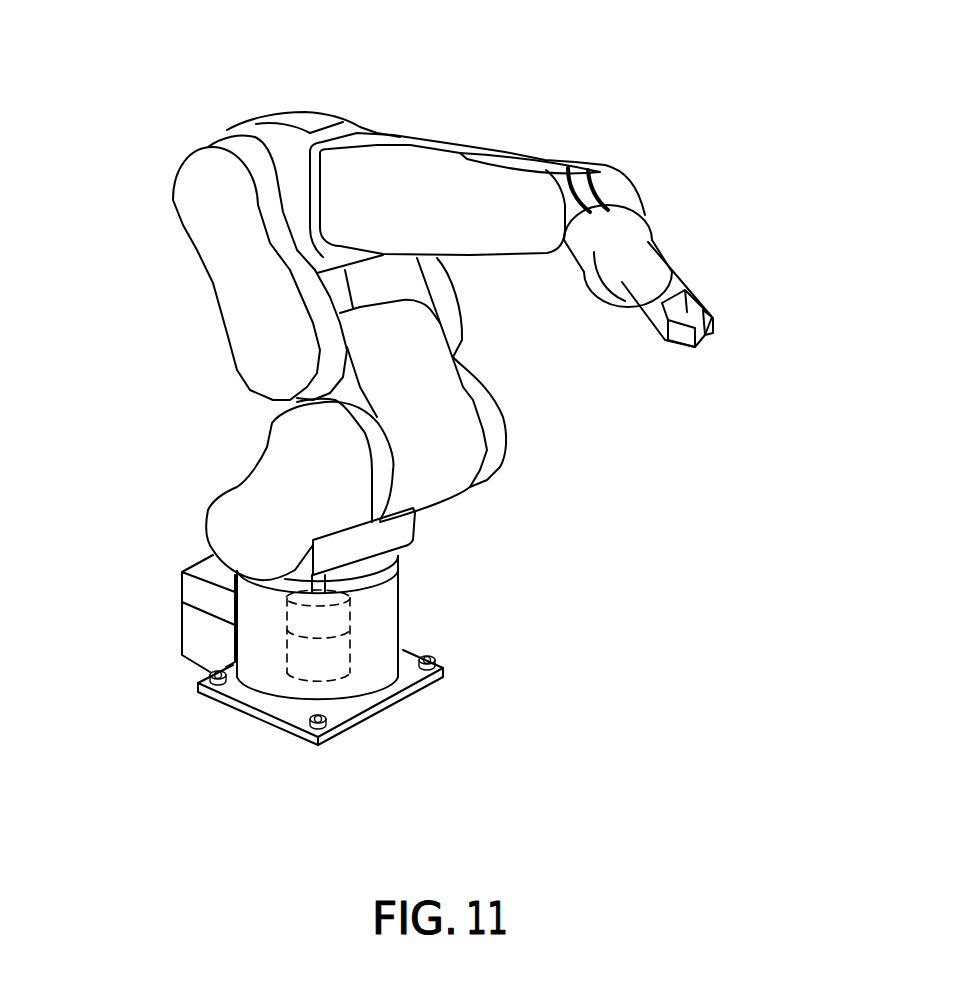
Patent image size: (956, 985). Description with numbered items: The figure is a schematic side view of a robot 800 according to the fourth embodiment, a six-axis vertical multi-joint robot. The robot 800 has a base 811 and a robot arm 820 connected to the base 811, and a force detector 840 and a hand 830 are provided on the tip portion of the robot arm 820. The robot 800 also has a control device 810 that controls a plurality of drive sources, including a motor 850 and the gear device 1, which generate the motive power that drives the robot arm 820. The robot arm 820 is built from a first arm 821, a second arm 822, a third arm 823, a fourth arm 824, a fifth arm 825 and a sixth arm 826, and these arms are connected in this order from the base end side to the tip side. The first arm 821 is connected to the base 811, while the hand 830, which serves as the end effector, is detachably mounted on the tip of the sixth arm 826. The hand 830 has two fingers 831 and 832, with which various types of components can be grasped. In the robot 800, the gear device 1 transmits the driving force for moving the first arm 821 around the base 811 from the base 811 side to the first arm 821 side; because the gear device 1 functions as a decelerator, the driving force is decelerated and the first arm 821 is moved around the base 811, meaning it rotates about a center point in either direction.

The gear device 1 is at (345, 468).
The robot 800 is at (522, 108).
The control device 810 is at (193, 628).
The base 811 is at (344, 694).
The robot arm 820 is at (428, 128).
The first arm 821 is at (237, 522).
The second arm 822 is at (237, 287).
The third arm 823 is at (270, 137).
The fourth arm 824 is at (343, 188).
The fifth arm 825 is at (600, 170).
The sixth arm 826 is at (620, 216).
The hand 830 is at (693, 282).
The finger 831 is at (713, 330).
The finger 832 is at (683, 350).
The force detector 840 is at (650, 240).
The motor 850 is at (350, 631).